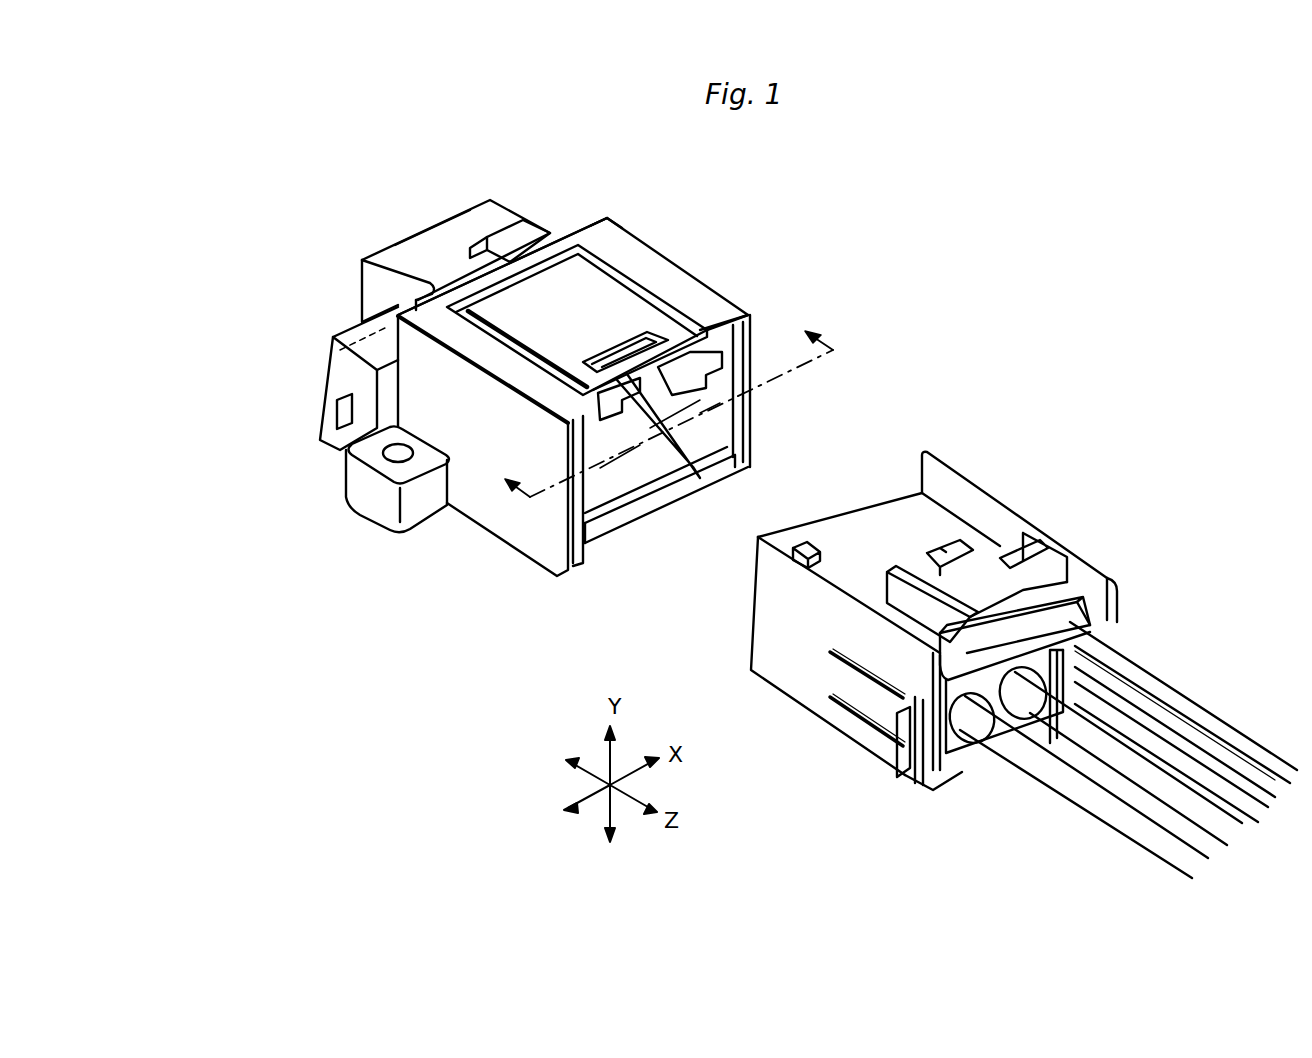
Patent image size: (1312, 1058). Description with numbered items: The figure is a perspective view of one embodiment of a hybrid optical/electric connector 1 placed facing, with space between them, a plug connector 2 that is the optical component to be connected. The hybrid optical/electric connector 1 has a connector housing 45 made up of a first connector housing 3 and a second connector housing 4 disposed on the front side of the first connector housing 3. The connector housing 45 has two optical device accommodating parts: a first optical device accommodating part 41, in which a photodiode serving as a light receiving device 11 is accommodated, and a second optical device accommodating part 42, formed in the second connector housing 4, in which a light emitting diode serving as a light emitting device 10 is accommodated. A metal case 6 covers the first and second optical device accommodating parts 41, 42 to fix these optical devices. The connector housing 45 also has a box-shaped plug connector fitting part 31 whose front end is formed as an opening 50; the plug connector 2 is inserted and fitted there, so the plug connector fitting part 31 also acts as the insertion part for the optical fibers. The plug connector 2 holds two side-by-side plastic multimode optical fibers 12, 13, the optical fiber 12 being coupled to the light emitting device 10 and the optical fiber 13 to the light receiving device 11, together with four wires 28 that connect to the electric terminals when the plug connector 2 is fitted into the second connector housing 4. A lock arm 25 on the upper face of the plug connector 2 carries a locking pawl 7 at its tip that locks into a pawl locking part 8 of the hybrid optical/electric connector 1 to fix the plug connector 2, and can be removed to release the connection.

The hybrid optical/electric connector 1 is at (534, 376).
The plug connector 2 is at (1024, 662).
The first connector housing 3 is at (510, 232).
The second connector housing 4 is at (682, 275).
The metal case 6 is at (432, 248).
The locking pawl 7 is at (957, 575).
The pawl locking part 8 is at (628, 346).
The light emitting device 10 is at (340, 344).
The light receiving device 11 is at (455, 235).
The optical fiber 12 is at (1057, 782).
The optical fiber 13 is at (1133, 773).
The lock arm 25 is at (985, 583).
The wires 28 is at (1145, 680).
The plug connector fitting part 31 is at (718, 302).
The first optical device accommodating part 41 is at (466, 256).
The second optical device accommodating part 42 is at (355, 352).
The connector housing 45 is at (617, 203).
The opening 50 is at (738, 404).